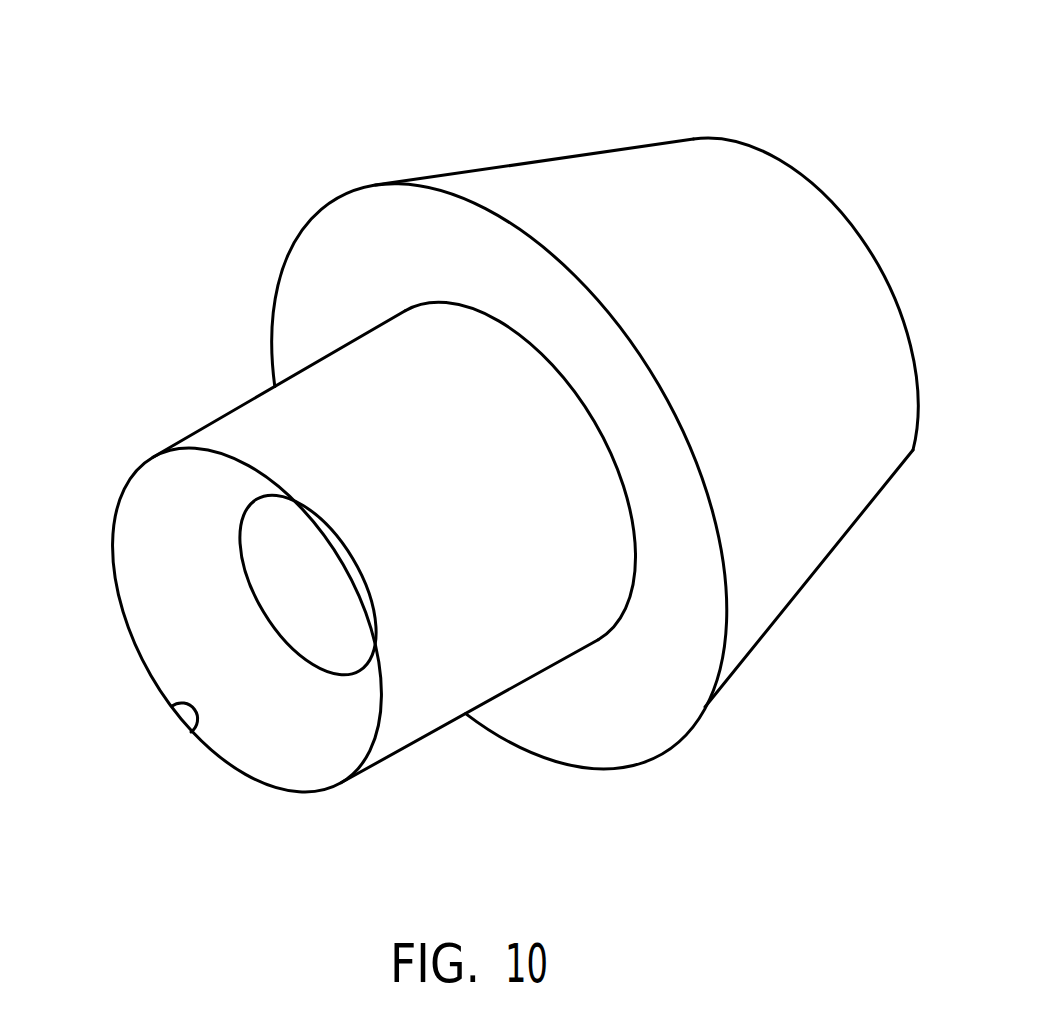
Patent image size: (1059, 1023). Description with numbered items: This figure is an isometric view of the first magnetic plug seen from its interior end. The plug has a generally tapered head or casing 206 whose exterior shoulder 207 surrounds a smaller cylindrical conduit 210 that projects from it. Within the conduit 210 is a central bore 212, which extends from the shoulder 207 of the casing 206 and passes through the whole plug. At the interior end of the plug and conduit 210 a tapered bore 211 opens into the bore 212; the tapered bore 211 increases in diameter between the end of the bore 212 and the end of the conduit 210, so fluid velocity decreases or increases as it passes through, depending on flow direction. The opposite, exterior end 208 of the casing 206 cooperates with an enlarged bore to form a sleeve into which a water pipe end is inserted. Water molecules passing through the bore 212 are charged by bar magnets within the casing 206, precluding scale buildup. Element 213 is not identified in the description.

The casing 206 is at (598, 195).
The exterior shoulder 207 is at (657, 712).
The end of casing 208 is at (787, 162).
The cylindrical conduit 210 is at (297, 428).
The tapered bore 211 is at (265, 733).
The central bore 212 is at (266, 602).
The notch 213 is at (172, 707).